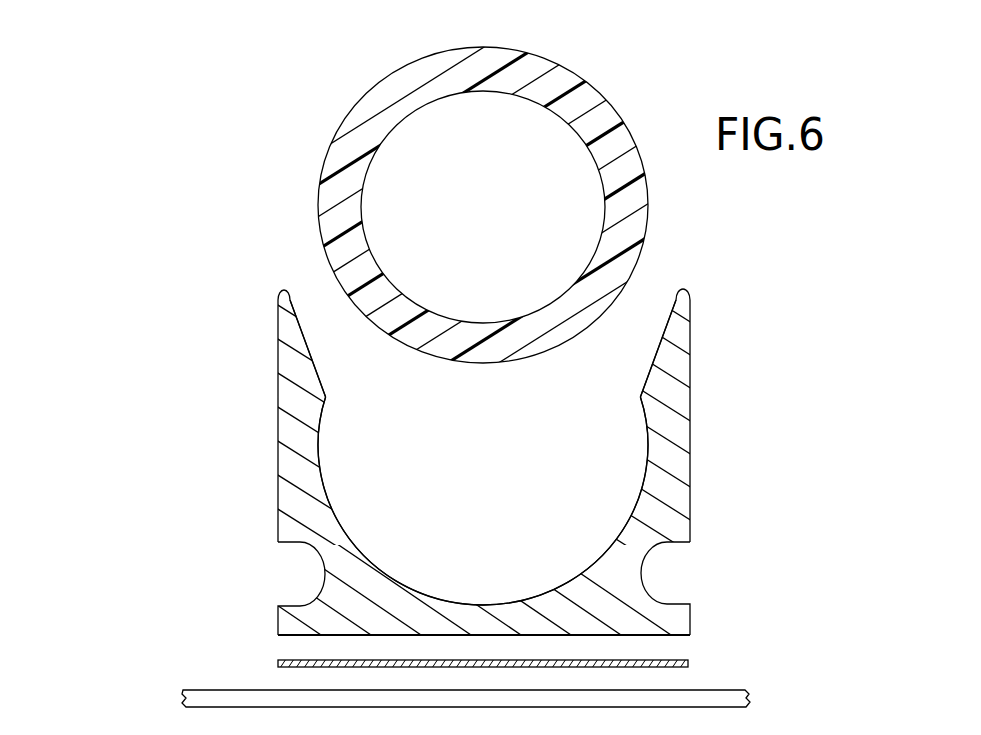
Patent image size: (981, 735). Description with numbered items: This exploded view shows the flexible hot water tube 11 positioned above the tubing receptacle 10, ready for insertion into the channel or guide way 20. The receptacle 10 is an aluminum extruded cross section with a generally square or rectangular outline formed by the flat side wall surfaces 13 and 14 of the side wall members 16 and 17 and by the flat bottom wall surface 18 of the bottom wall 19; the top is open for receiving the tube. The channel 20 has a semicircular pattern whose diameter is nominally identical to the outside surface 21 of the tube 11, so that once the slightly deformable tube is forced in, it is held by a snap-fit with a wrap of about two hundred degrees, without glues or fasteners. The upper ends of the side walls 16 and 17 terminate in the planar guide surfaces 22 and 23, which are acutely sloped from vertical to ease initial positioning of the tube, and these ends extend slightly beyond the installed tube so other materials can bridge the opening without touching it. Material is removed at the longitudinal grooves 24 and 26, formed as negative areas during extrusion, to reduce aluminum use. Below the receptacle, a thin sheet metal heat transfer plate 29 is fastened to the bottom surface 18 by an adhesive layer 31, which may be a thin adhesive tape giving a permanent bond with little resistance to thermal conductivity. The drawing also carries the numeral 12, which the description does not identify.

The tubing receptacle 10 is at (712, 358).
The flexible hot water tube 11 is at (578, 62).
The substrate assembly 12 is at (438, 672).
The flat side wall surface 13 is at (690, 450).
The flat side wall surface 14 is at (277, 432).
The side wall member 16 is at (662, 423).
The side wall member 17 is at (315, 480).
The flat bottom wall surface 18 is at (290, 637).
The bottom wall 19 is at (393, 600).
The channel or guide way 20 is at (486, 474).
The outside surface of the flexible tubing 21 is at (649, 196).
The guide surface 22 is at (653, 358).
The guide surface 23 is at (310, 348).
The longitudinal groove 24 is at (685, 570).
The longitudinal groove 26 is at (283, 575).
The heat transfer plate 29 is at (733, 702).
The adhesive layer 31 is at (688, 664).